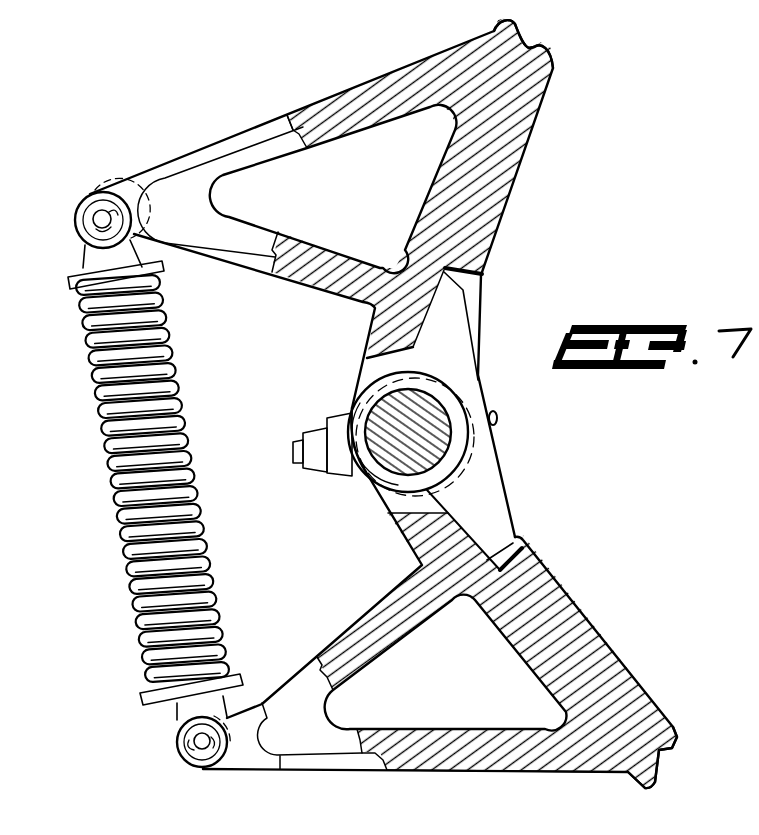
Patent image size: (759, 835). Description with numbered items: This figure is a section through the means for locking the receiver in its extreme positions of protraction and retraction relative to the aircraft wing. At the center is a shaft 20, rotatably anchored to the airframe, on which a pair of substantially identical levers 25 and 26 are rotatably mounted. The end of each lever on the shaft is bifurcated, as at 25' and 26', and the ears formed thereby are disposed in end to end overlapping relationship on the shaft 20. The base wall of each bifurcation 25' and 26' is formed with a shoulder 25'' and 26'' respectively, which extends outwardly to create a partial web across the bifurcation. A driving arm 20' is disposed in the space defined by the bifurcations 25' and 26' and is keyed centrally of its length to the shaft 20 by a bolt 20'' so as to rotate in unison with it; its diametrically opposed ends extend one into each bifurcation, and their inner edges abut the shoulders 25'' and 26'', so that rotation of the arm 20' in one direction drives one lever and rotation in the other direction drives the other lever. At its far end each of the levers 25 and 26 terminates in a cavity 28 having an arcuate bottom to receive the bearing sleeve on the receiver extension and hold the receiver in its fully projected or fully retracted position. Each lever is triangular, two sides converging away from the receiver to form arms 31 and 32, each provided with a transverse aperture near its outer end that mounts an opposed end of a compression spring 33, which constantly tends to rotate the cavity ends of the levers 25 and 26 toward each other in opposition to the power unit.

The shaft 20 is at (393, 445).
The driving arm 20' is at (442, 425).
The bolt 20'' is at (302, 444).
The lever 25 is at (326, 277).
The bifurcation 25' is at (486, 324).
The shoulder 25'' is at (384, 314).
The lever 26 is at (440, 598).
The bifurcation 26' is at (530, 531).
The shoulder 26'' is at (432, 530).
The cavity 28 is at (533, 48).
The arm 31 is at (311, 111).
The arm 32 is at (470, 745).
The compression spring 33 is at (120, 448).